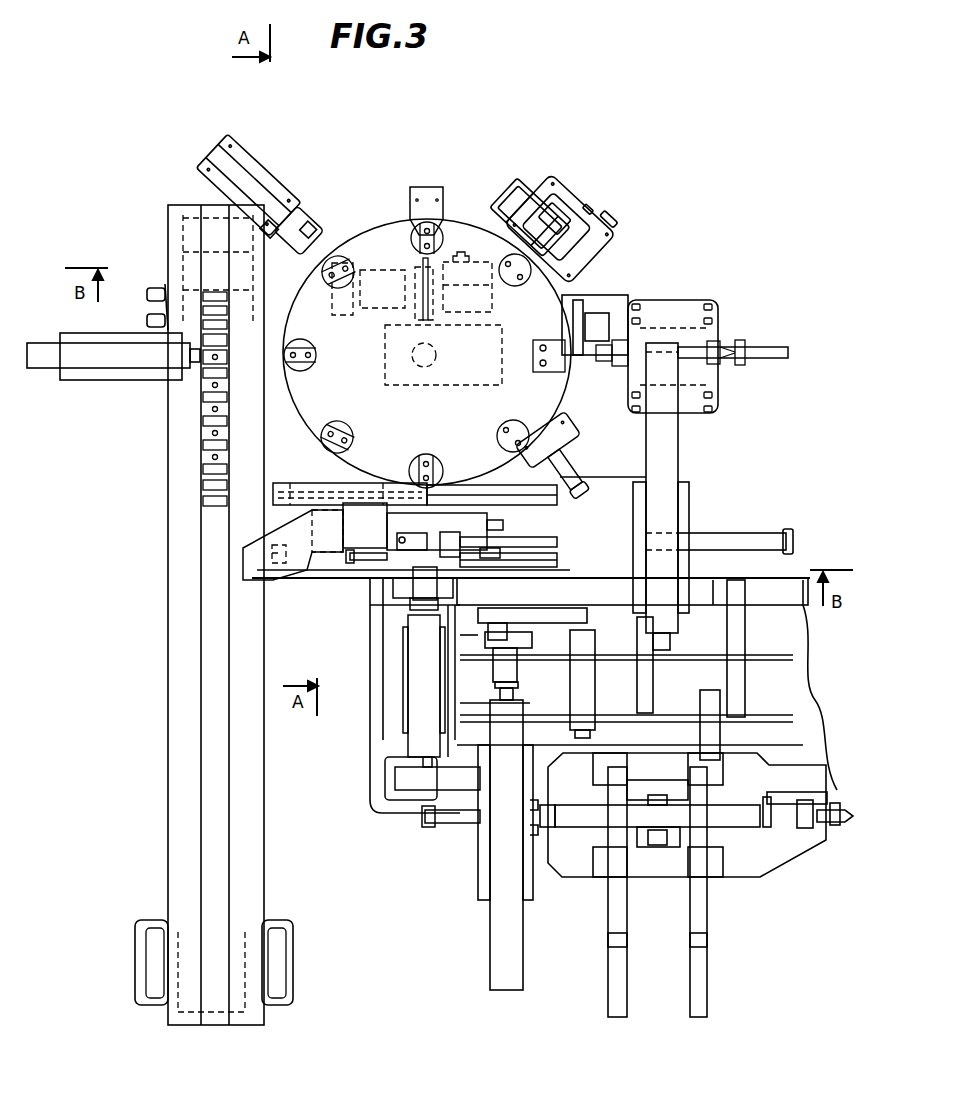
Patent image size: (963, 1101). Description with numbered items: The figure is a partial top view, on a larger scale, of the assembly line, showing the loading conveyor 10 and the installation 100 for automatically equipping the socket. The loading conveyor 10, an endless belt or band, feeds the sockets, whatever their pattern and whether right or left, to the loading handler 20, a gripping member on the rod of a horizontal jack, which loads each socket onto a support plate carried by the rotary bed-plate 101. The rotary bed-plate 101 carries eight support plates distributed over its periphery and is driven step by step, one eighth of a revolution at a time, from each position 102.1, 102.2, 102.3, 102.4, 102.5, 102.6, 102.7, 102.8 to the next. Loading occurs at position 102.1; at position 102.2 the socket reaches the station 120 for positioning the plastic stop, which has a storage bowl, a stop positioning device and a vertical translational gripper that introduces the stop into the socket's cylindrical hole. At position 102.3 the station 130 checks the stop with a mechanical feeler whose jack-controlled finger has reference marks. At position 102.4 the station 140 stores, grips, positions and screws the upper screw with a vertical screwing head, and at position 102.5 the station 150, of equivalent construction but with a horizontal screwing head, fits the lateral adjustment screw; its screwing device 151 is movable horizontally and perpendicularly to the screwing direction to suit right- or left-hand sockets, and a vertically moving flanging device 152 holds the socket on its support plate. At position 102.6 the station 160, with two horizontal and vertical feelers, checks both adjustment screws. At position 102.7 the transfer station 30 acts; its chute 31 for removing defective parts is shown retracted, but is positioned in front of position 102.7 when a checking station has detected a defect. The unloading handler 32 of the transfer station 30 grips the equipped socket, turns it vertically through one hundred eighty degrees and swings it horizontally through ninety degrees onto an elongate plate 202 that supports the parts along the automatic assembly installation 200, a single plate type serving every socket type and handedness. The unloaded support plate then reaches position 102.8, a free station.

The loading conveyor 10 is at (160, 692).
The loading handler 20 is at (138, 392).
The transfer station 30 is at (715, 518).
The chute for removing defective parts 31 is at (305, 552).
The unloading handler 32 is at (400, 720).
The automatic equipping installation 100 is at (430, 275).
The rotary bed-plate 101 is at (545, 318).
The position 102.1 is at (306, 366).
The position 102.2 is at (328, 285).
The position 102.3 is at (410, 238).
The position 102.4 is at (500, 262).
The position 102.5 is at (560, 372).
The position 102.6 is at (497, 442).
The position 102.7 is at (412, 472).
The position 102.8 is at (350, 438).
The station for positioning the stop 120 is at (290, 170).
The station for checking the positioning of the stop 130 is at (426, 172).
The station for distributing and positioning the upper screw 140 is at (608, 222).
The station distributing and positioning the lateral adjustment screw 150 is at (674, 367).
The screwing device 151 is at (722, 362).
The flanging device 152 is at (574, 364).
The station for checking the positioning of the two adjustment screws 160 is at (580, 467).
The automatic assembly installation 200 is at (583, 792).
The elongate plate 202 is at (570, 700).